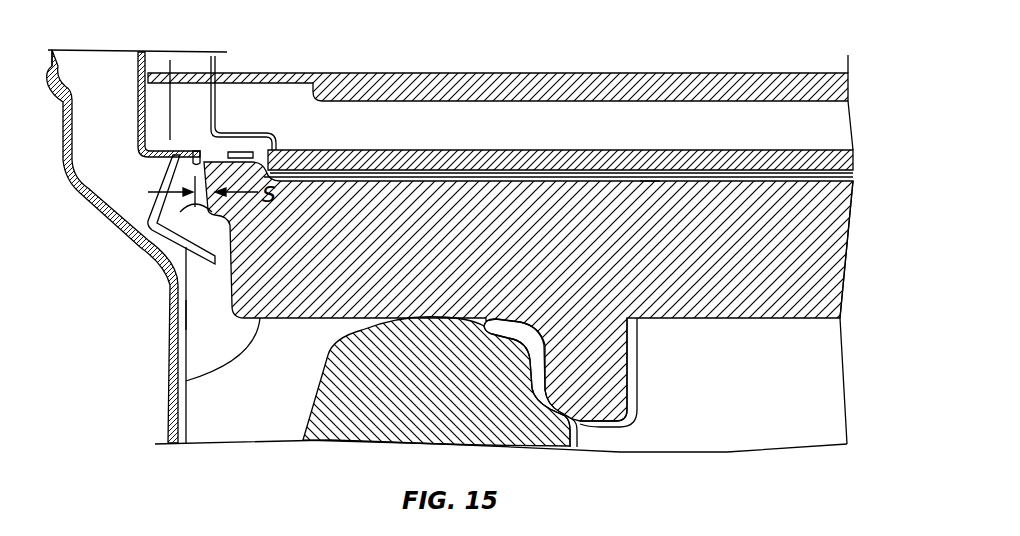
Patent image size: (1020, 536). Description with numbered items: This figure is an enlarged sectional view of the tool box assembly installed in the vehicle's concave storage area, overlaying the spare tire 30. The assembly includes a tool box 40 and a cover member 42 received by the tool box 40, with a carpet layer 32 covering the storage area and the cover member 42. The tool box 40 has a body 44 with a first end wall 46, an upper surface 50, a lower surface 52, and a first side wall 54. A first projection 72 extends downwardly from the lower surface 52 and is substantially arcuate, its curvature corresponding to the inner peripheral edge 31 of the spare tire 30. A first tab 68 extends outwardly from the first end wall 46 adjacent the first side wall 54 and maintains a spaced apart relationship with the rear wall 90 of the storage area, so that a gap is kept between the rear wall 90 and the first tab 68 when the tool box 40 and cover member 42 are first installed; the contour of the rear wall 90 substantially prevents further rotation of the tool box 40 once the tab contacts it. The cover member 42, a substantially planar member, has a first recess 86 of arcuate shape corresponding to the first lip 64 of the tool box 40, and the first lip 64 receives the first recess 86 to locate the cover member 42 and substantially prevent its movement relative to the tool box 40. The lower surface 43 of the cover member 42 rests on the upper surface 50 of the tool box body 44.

The spare tire 30 is at (304, 408).
The inner peripheral edge 31 is at (547, 360).
The carpet layer 32 is at (760, 72).
The tool box 40 is at (847, 259).
The cover member 42 is at (818, 149).
The lower surface 43 is at (650, 181).
The body 44 is at (227, 285).
The first end wall 46 is at (230, 307).
The upper surface 50 is at (550, 181).
The lower surface 52 is at (186, 381).
The first side wall 54 is at (824, 292).
The first lip 64 is at (242, 152).
The first tab 68 is at (148, 243).
The first projection 72 is at (634, 397).
The first recess 86 is at (258, 152).
The rear wall 90 is at (196, 151).